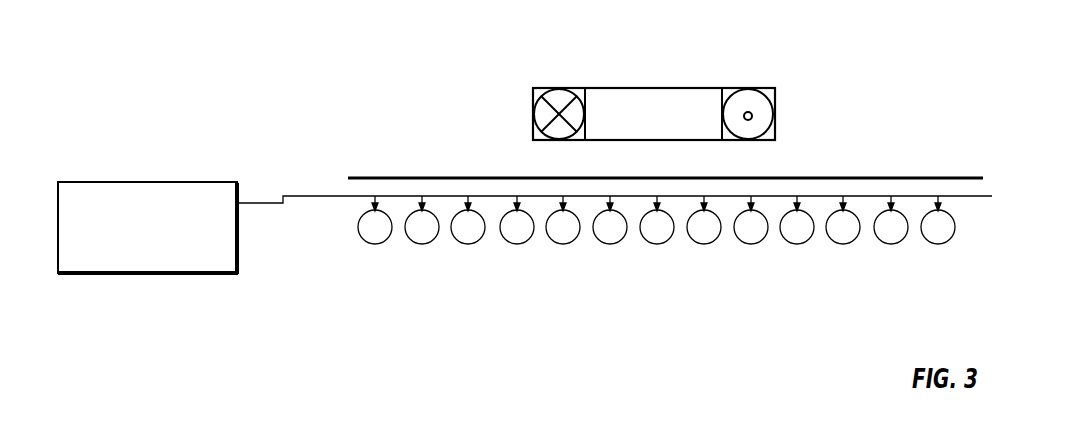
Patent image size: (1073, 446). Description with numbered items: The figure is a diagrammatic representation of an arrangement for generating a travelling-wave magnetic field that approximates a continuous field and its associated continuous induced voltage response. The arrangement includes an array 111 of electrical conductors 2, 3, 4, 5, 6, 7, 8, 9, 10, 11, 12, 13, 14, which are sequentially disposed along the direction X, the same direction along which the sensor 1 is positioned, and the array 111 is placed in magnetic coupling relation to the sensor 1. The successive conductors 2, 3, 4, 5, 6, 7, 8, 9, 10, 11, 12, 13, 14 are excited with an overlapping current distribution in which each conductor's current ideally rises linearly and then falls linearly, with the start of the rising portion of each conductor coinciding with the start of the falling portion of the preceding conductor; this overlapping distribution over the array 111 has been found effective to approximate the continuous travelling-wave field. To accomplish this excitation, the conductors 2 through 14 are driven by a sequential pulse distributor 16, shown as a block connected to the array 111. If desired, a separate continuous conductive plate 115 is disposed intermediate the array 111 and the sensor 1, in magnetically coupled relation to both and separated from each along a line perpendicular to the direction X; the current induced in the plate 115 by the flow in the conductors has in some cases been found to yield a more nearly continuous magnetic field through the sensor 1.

The sensor 1 is at (768, 88).
The electrical conductor 2 is at (372, 235).
The electrical conductor 3 is at (419, 235).
The electrical conductor 4 is at (465, 235).
The electrical conductor 5 is at (514, 235).
The electrical conductor 6 is at (560, 235).
The electrical conductor 7 is at (607, 235).
The electrical conductor 8 is at (654, 235).
The electrical conductor 9 is at (701, 235).
The electrical conductor 10 is at (748, 235).
The electrical conductor 11 is at (794, 235).
The electrical conductor 12 is at (840, 235).
The electrical conductor 13 is at (888, 235).
The electrical conductor 14 is at (935, 235).
The sequential pulse distributor 16 is at (208, 267).
The array of electrical conductors 111 is at (1052, 216).
The continuous conductive plate 115 is at (960, 180).